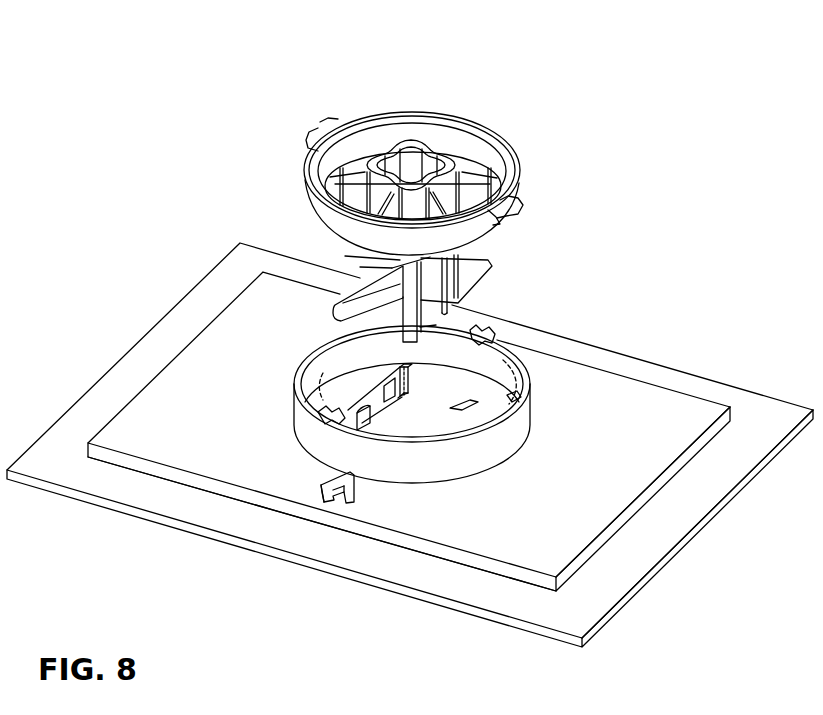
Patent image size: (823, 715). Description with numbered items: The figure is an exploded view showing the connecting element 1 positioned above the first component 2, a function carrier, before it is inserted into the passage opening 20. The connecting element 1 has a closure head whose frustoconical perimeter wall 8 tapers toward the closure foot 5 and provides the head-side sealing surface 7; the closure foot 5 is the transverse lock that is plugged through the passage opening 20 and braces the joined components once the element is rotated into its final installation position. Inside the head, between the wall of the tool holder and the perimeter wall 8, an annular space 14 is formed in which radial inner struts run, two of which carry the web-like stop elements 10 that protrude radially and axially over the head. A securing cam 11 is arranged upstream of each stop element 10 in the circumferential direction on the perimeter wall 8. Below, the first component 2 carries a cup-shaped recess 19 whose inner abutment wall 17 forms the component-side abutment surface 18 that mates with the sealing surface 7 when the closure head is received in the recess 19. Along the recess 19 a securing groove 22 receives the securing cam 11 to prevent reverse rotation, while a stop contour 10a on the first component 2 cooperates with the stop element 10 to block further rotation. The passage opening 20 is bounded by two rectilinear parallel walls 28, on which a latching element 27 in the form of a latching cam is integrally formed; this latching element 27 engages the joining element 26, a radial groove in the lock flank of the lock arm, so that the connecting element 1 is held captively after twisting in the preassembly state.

The connecting element 1 is at (409, 138).
The first component 2 is at (163, 402).
The closure foot 5 is at (493, 264).
The sealing surface 7 is at (313, 205).
The perimeter wall 8 is at (414, 111).
The stop elements 10 is at (310, 137).
The stop contour 10a is at (348, 410).
The securing cam 11 is at (338, 122).
The annular space 14 is at (457, 147).
The abutment wall 17 is at (409, 407).
The abutment surface 18 is at (335, 370).
The recess 19 is at (345, 397).
The passage opening 20 is at (400, 397).
The securing groove 22 is at (497, 334).
The joining element 26 is at (428, 325).
The latching element 27 is at (400, 399).
The parallel walls 28 is at (400, 398).